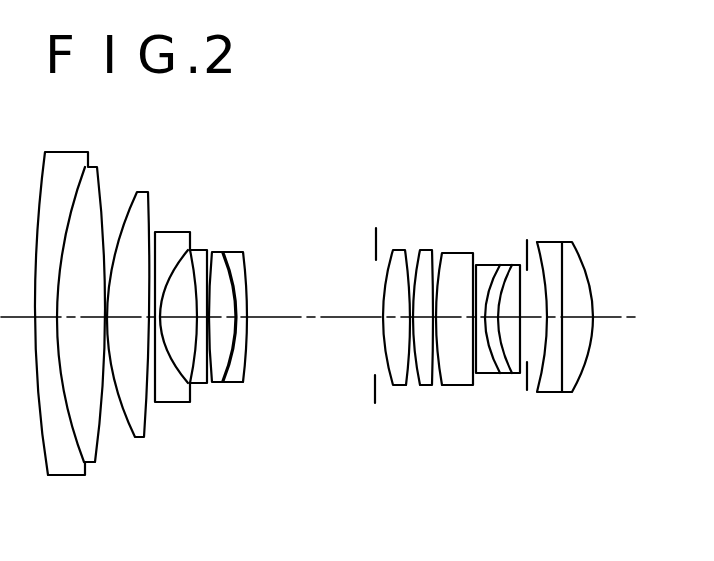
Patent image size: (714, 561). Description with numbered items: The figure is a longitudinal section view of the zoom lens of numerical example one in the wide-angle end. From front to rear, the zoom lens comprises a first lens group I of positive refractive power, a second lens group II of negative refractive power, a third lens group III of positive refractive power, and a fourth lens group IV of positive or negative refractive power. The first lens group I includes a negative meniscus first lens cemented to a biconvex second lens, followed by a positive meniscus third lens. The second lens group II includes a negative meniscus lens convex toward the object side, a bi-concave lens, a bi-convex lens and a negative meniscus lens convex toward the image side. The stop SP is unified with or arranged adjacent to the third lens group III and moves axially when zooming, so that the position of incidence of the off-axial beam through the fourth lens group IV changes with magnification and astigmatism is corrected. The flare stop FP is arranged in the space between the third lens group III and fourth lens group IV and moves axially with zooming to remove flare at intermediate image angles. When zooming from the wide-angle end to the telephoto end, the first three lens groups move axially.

The first lens group I is at (33, 491).
The second lens group II is at (162, 491).
The third lens group III is at (393, 491).
The fourth lens group IV is at (534, 491).
The stop SP is at (376, 243).
The flare stop FP is at (526, 252).